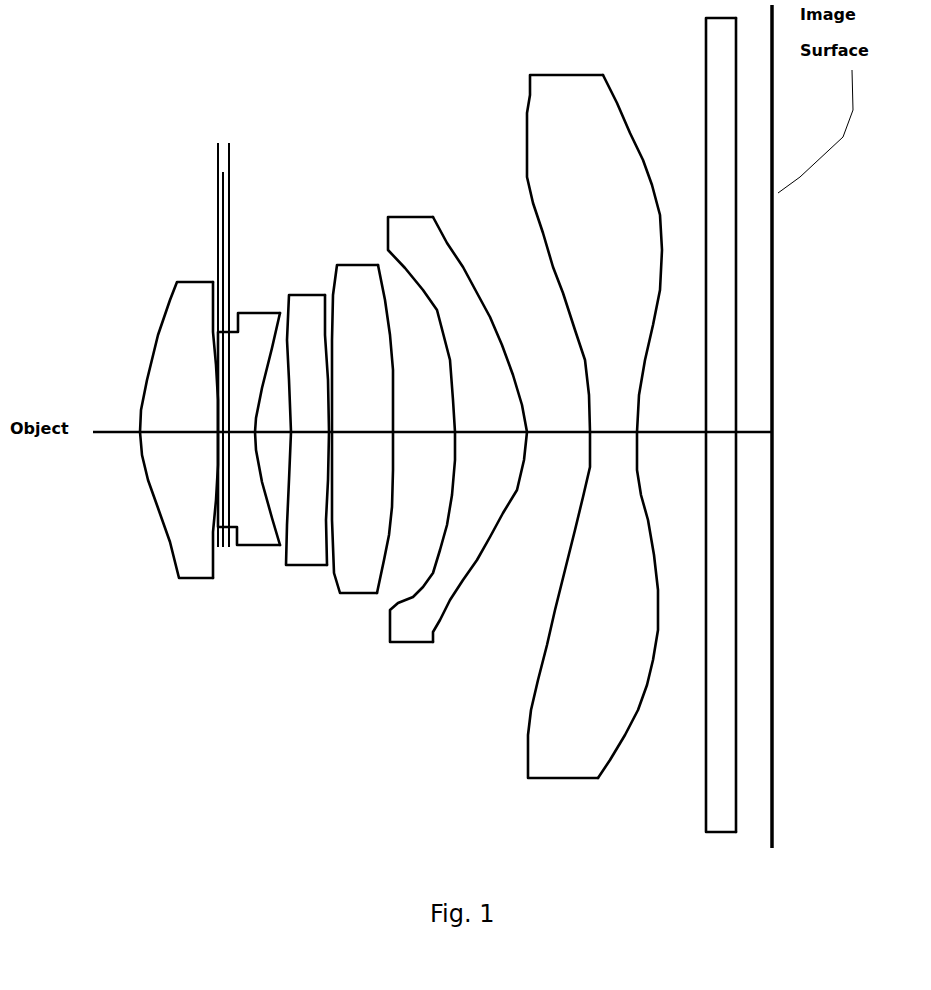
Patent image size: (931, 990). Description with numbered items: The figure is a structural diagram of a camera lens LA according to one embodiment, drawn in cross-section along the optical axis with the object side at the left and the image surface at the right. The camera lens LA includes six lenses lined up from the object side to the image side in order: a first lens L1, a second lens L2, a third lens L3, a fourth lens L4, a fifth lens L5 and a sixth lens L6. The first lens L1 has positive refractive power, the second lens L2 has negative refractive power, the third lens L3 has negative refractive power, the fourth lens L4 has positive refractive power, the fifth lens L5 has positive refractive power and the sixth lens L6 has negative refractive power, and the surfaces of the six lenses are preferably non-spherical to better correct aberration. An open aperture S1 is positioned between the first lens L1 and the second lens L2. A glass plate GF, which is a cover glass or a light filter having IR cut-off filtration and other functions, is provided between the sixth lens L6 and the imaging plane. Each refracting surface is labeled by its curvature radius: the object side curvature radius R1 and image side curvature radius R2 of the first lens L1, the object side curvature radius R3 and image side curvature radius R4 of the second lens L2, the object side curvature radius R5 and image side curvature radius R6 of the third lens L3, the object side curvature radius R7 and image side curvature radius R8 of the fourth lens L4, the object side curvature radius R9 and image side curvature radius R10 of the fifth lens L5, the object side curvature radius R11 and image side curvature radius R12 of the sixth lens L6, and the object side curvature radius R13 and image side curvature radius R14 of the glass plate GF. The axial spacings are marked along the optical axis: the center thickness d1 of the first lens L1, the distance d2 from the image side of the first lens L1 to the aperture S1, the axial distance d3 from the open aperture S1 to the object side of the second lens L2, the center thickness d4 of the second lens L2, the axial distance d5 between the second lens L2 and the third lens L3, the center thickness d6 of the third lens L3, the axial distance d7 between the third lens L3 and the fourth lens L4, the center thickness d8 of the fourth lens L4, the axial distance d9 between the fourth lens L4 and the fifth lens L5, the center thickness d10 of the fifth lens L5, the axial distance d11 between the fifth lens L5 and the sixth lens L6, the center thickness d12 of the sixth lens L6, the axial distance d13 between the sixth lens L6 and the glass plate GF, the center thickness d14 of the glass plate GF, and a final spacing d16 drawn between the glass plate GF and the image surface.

The camera lens LA is at (183, 80).
The first lens L1 is at (165, 449).
The second lens L2 is at (237, 477).
The third lens L3 is at (295, 479).
The fourth lens L4 is at (359, 476).
The fifth lens L5 is at (457, 468).
The sixth lens L6 is at (562, 447).
The open aperture S1 is at (216, 565).
The glass plate GF is at (654, 429).
The object side curvature radius of the first lens R1 is at (143, 443).
The image side curvature radius of the first lens R2 is at (218, 450).
The object side curvature radius of the second lens R3 is at (218, 500).
The image side curvature radius of the second lens R4 is at (257, 447).
The object side curvature radius of the third lens R5 is at (288, 470).
The image side curvature radius of the third lens R6 is at (320, 467).
The object side curvature radius of the fourth lens R7 is at (338, 593).
The image side curvature radius of the fourth lens R8 is at (393, 447).
The object side curvature radius of the fifth lens R9 is at (454, 453).
The image side curvature radius of the fifth lens R10 is at (527, 445).
The object side curvature radius of the sixth lens R11 is at (573, 510).
The image side curvature radius of the sixth lens R12 is at (647, 527).
The object side curvature radius of the glass plate R13 is at (703, 550).
The image side curvature radius of the glass plate R14 is at (734, 582).
The center thickness of the first lens d1 is at (171, 414).
The distance from the image side of the first lens to the aperture d2 is at (237, 157).
The axial distance from the open aperture to the object side of the second lens d3 is at (195, 200).
The center thickness of the second lens d4 is at (242, 414).
The axial distance between the second lens and the third lens d5 is at (271, 414).
The center thickness of the third lens d6 is at (304, 414).
The axial distance between the third lens and the fourth lens d7 is at (322, 445).
The center thickness of the fourth lens d8 is at (359, 414).
The axial distance between the fourth lens and the fifth lens d9 is at (424, 414).
The center thickness of the fifth lens d10 is at (493, 414).
The axial distance between the fifth lens and the sixth lens d11 is at (561, 414).
The center thickness of the sixth lens d12 is at (610, 414).
The axial distance between the sixth lens and the glass plate d13 is at (661, 414).
The center thickness of the glass plate d14 is at (723, 430).
The on-axis distance from image side surface of optical filter to image surface d16 is at (757, 430).